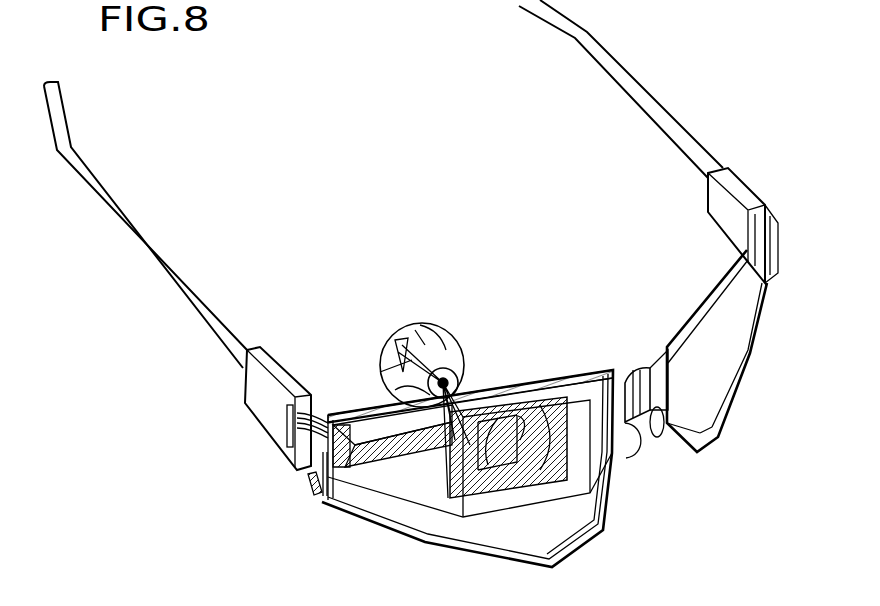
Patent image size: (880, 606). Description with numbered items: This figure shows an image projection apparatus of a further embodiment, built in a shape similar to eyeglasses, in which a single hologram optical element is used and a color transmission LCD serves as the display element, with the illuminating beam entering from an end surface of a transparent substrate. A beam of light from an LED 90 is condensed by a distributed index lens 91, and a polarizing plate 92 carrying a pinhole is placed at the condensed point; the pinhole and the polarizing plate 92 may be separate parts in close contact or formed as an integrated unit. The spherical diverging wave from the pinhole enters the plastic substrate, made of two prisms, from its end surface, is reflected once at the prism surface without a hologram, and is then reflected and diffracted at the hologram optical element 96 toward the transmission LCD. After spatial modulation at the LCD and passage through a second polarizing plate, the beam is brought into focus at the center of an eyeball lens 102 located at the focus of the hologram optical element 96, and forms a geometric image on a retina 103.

The LED 90 is at (312, 487).
The distributed index lens 91 is at (317, 495).
The polarizing plate 92 is at (322, 503).
The hologram optical element 96 is at (580, 485).
The eyeball lens 102 is at (457, 365).
The retina 103 is at (407, 325).